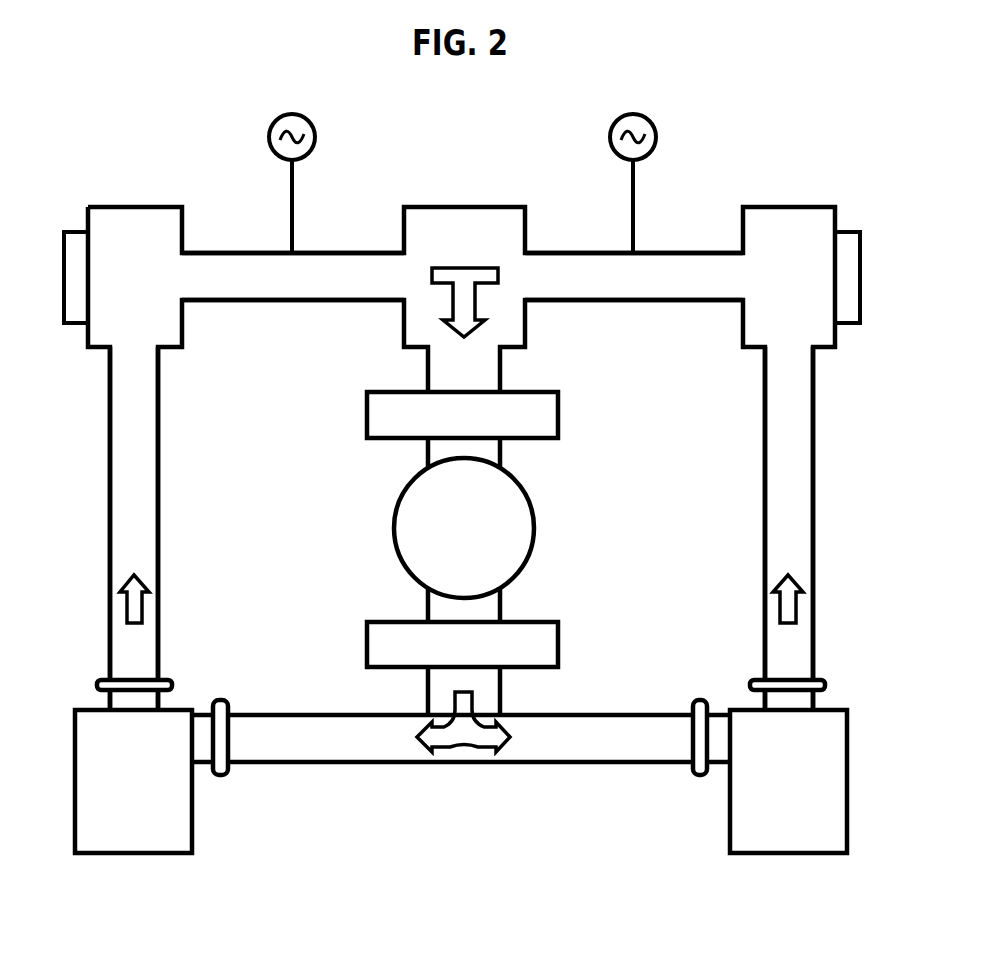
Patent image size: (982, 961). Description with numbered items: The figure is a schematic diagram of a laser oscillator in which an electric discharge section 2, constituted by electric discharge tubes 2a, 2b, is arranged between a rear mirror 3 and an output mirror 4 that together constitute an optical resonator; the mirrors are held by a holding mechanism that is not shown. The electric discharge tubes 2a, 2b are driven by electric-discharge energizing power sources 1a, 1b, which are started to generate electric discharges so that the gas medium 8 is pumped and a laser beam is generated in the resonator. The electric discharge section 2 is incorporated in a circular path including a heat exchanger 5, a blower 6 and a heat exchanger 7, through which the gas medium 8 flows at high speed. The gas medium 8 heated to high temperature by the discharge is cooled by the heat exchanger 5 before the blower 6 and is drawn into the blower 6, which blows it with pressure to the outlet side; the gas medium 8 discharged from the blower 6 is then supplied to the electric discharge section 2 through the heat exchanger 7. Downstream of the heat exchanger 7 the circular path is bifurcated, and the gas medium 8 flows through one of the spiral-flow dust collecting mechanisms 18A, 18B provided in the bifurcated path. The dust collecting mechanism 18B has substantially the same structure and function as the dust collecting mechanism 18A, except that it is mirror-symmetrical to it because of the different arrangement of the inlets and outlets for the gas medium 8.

The electric-discharge energizing power source 1a is at (316, 128).
The electric-discharge energizing power source 1b is at (657, 133).
The electric discharge section 2 is at (565, 190).
The electric discharge tube 2a is at (294, 302).
The electric discharge tube 2b is at (633, 302).
The rear mirror 3 is at (76, 230).
The output mirror 4 is at (850, 230).
The heat exchanger 5 is at (559, 411).
The blower 6 is at (538, 526).
The heat exchanger 7 is at (559, 641).
The gas medium 8 is at (126, 505).
The spiral-flow dust collecting mechanism 18A is at (193, 829).
The spiral-flow dust collecting mechanism 18B is at (729, 825).